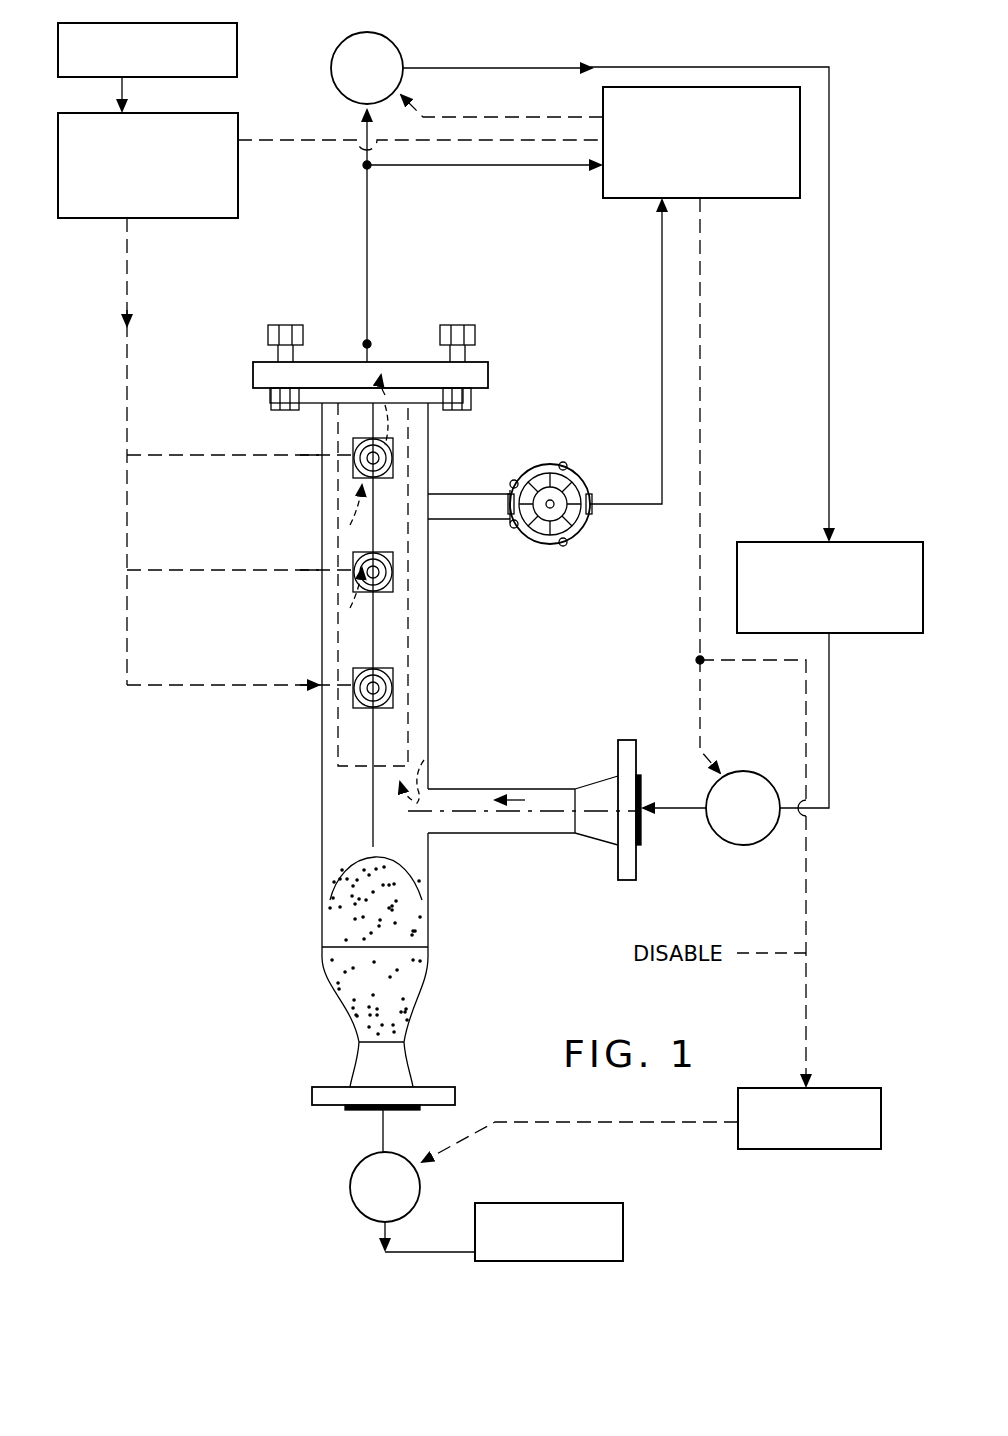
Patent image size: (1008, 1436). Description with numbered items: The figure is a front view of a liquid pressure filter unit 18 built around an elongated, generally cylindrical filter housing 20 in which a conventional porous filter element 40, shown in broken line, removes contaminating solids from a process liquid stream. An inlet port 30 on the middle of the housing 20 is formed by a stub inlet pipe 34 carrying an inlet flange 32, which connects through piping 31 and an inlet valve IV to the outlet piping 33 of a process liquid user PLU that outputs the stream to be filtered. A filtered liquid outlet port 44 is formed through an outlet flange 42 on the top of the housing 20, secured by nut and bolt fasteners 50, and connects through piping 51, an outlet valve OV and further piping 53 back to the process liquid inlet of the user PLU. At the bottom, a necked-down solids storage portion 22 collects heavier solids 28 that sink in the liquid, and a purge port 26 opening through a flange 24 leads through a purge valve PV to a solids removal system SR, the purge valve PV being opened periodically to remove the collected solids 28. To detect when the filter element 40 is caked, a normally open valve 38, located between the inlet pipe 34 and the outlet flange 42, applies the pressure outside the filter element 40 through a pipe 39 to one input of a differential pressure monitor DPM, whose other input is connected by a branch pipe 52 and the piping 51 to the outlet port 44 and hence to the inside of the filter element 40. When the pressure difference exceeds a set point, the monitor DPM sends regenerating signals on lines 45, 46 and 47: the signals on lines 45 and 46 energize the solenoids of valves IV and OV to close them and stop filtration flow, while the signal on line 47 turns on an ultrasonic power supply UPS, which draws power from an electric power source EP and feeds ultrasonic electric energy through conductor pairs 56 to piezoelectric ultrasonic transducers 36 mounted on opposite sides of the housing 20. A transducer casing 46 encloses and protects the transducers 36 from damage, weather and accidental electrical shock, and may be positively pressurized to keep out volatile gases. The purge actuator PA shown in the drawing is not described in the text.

The liquid pressure filter unit 18 is at (214, 632).
The filter housing 20 is at (322, 789).
The solids storage zone or portion 22 is at (358, 1031).
The flange 24 is at (312, 1092).
The purge port 26 is at (366, 1110).
The solids 28 is at (410, 915).
The inlet port 30 is at (641, 808).
The piping 31 is at (678, 812).
The inlet flange 32 is at (624, 740).
The outlet piping 33 is at (829, 690).
The stub inlet pipe 34 is at (480, 786).
The ultrasonic transducers 36 is at (356, 470).
The valve 38 is at (570, 470).
The pipe 39 is at (660, 390).
The filter element 40 is at (412, 626).
The outlet flange 42 is at (488, 386).
The filtered liquid outlet port 44 is at (372, 380).
The signal line 45 is at (700, 352).
The signal line / transducer casing 46 is at (533, 86).
The signal line 47 is at (268, 148).
The nut and bolt fasteners 50 is at (275, 399).
The piping 51 is at (370, 300).
The branch pipe 52 is at (478, 170).
The piping 53 is at (484, 66).
The conductor pairs 56 is at (128, 541).
The electric power source EP is at (238, 45).
The ultrasonic power supply UPS is at (238, 122).
The outlet valve OV is at (367, 68).
The differential pressure monitor DPM is at (735, 198).
The process liquid user device PLU is at (895, 540).
The inlet valve IV is at (743, 808).
The purge valve PV is at (385, 1187).
The purge actuator PA is at (847, 1149).
The solids removal system SR is at (623, 1207).